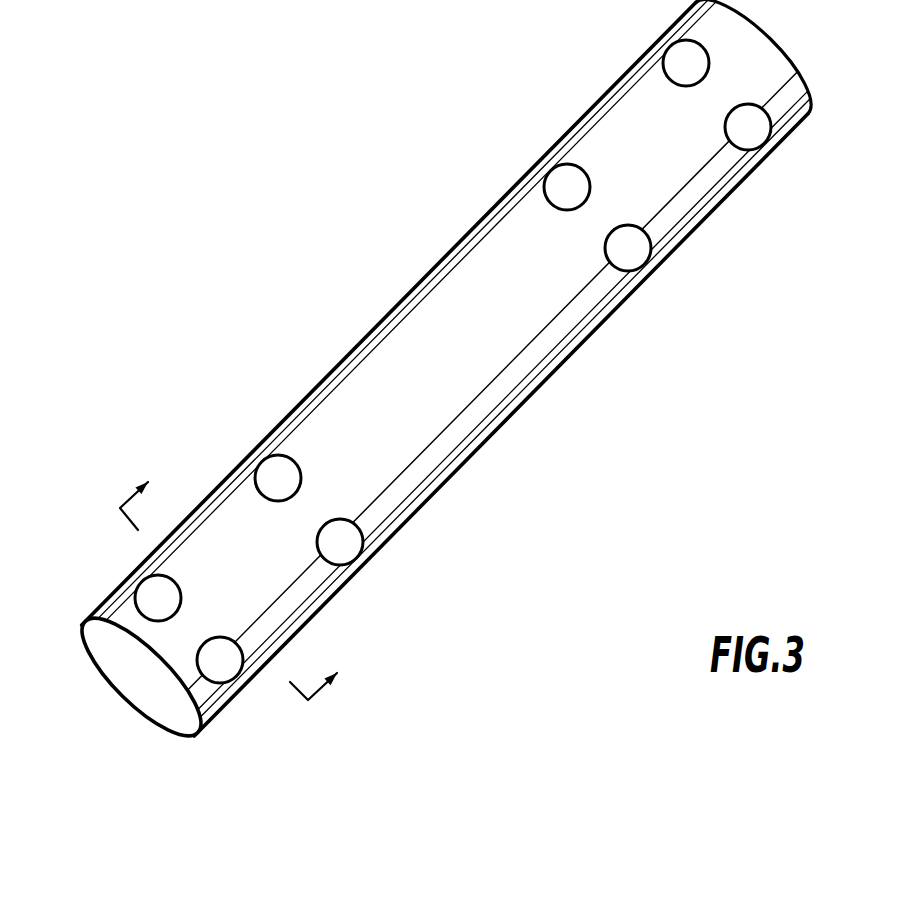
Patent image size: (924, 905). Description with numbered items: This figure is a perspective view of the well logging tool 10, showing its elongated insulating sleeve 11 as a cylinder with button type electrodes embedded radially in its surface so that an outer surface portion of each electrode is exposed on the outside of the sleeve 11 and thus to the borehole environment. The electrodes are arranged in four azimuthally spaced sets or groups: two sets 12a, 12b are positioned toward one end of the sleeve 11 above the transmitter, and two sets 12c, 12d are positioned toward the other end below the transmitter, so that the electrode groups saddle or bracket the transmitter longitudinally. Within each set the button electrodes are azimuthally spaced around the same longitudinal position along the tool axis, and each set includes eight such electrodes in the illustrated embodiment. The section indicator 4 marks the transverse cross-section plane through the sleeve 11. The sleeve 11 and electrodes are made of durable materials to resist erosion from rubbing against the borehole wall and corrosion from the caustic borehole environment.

The tubular body 10 is at (328, 168).
The sleeve 11 is at (513, 418).
The set of button electrodes 12a is at (663, 285).
The set of button electrodes 12b is at (782, 167).
The set of button electrodes 12c is at (377, 572).
The set of button electrodes 12d is at (250, 697).
The section line 4- 4 is at (245, 578).